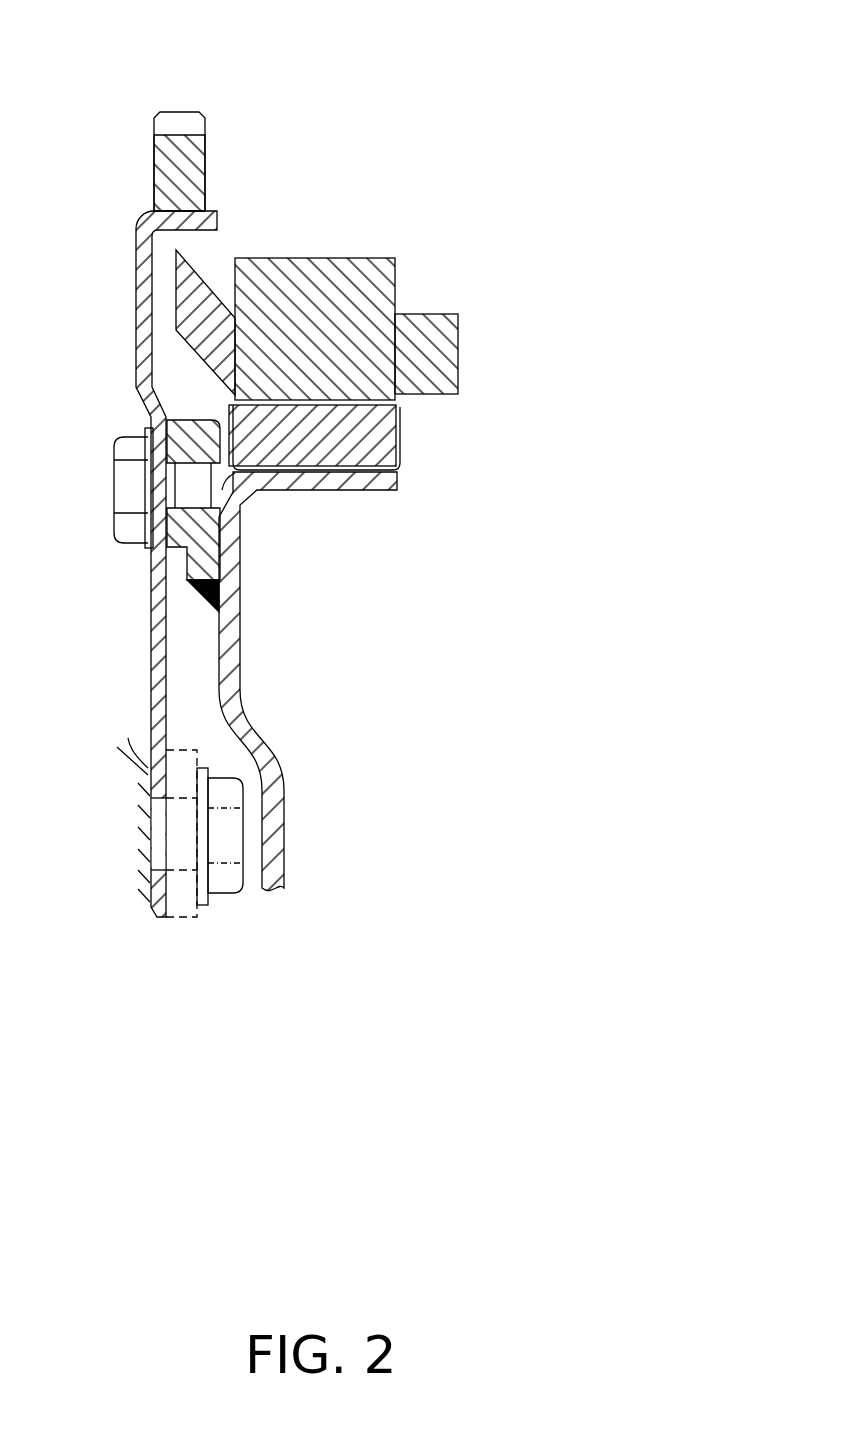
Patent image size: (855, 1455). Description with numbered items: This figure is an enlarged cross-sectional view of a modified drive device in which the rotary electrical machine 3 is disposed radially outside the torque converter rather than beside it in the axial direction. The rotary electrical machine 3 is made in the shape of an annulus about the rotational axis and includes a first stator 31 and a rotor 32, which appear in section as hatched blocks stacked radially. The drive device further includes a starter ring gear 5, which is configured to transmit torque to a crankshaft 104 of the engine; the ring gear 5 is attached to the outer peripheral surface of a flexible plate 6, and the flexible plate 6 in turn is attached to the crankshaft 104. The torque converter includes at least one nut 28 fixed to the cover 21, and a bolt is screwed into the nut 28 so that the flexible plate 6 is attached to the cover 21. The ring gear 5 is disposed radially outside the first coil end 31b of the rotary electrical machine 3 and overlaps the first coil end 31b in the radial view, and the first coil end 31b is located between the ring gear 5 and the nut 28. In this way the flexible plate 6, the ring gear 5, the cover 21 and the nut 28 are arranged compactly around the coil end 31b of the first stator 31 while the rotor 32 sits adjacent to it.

The rotary electrical machine 3 is at (391, 303).
The starter ring gear 5 is at (181, 112).
The flexible plate 6 is at (135, 348).
The cover 21 is at (218, 630).
The nut 28 is at (190, 550).
The first stator 31 is at (432, 292).
The first coil end 31b is at (193, 282).
The rotor 32 is at (413, 447).
The crankshaft 104 is at (128, 840).